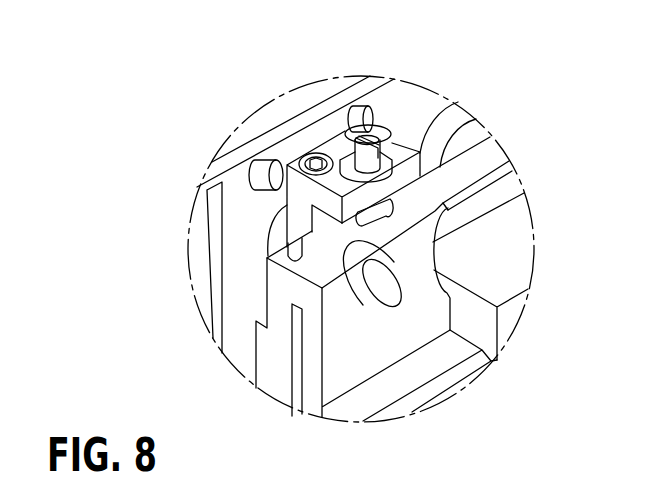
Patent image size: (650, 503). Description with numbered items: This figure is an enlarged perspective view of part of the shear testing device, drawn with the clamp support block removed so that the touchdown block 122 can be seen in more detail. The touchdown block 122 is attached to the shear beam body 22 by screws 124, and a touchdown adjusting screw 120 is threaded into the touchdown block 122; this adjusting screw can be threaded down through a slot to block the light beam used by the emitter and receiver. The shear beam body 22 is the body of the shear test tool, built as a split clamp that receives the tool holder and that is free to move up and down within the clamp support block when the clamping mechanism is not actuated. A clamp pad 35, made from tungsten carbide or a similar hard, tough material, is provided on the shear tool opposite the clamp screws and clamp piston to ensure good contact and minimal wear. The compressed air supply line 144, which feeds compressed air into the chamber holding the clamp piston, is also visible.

The shear beam body 22 is at (450, 331).
The clamp pad 35 is at (383, 286).
The touchdown adjusting screw 120 is at (393, 147).
The touchdown block 122 is at (313, 152).
The screws 124 is at (258, 137).
The compressed air supply line 144 is at (319, 144).